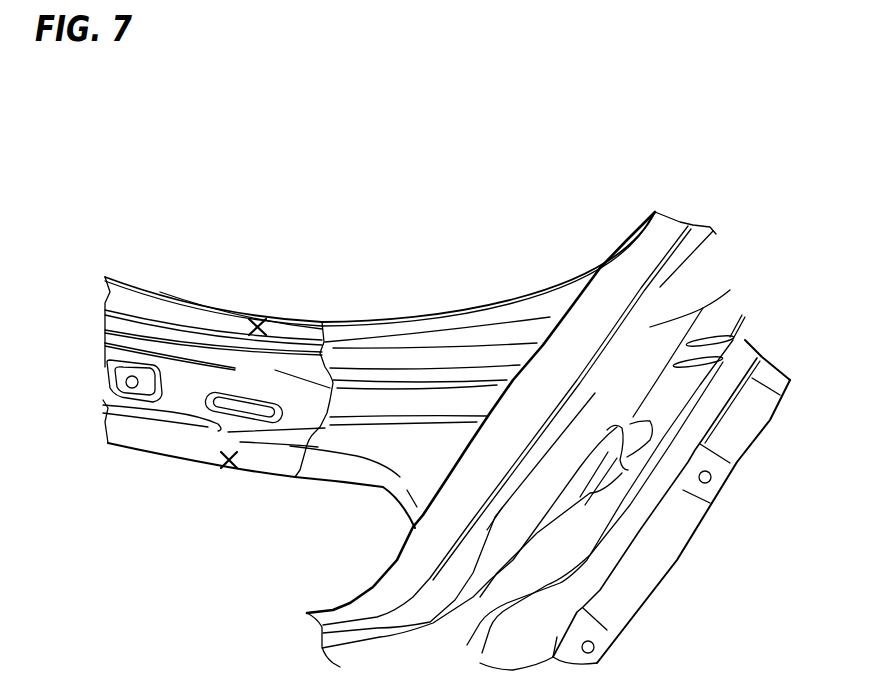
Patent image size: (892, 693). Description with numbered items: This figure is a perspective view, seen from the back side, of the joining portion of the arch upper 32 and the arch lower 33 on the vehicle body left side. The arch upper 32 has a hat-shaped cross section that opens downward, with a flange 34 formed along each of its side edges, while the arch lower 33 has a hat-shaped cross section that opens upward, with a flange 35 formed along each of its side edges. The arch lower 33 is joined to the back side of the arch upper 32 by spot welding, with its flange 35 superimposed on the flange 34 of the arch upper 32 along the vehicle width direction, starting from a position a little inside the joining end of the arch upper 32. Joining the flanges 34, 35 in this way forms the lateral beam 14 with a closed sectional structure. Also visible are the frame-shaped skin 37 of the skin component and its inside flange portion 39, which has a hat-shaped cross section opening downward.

The lateral beam 14 is at (326, 316).
The arch lower 33 is at (240, 365).
The arch upper 32 is at (373, 330).
The flange 35 is at (175, 313).
The flange 34 is at (440, 332).
The inside flange portion 39 is at (645, 250).
The skin 37 is at (743, 432).